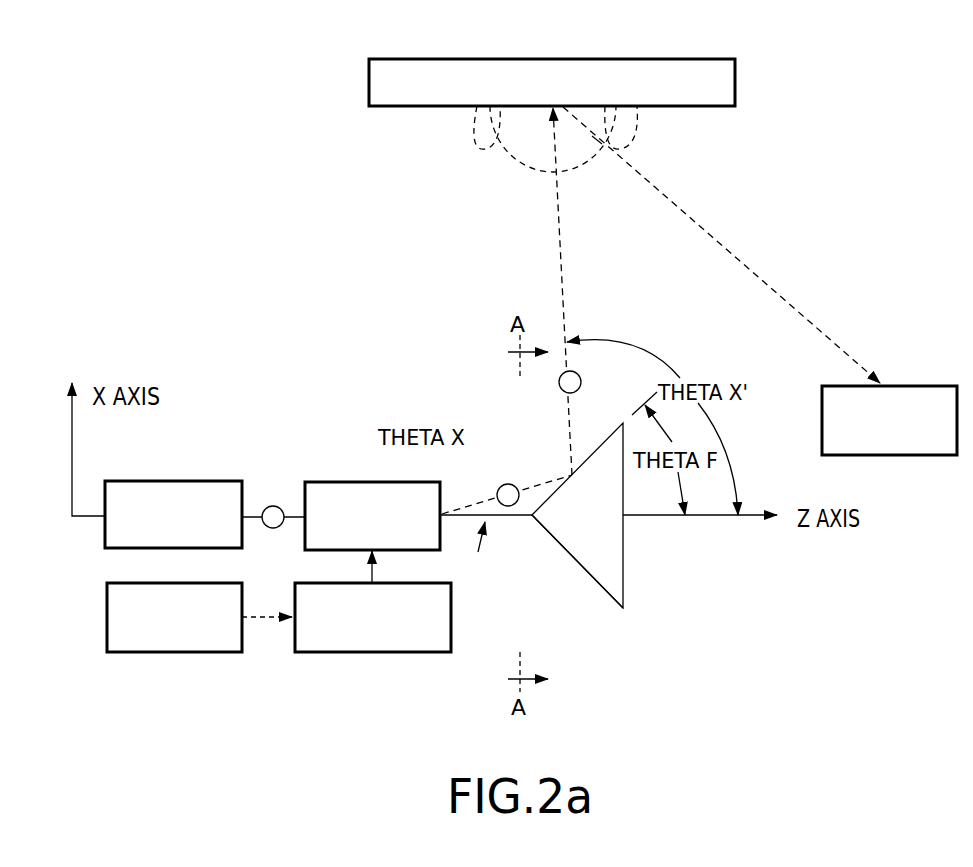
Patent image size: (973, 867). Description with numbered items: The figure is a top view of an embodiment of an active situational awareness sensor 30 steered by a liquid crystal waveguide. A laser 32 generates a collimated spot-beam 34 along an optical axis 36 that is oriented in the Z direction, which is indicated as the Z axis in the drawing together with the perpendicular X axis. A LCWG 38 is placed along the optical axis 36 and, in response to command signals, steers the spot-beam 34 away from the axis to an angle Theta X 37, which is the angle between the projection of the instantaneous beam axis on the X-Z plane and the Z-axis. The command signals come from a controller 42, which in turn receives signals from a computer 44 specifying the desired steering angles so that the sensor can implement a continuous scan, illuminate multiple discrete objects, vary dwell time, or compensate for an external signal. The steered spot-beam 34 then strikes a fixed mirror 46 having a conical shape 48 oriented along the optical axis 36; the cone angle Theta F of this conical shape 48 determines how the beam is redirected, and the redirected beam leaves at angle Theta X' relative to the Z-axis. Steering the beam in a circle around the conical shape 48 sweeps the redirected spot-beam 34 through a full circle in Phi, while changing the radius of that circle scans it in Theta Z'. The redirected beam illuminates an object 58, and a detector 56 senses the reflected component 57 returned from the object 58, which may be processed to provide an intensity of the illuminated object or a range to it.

The active situational awareness sensor 30 is at (248, 352).
The laser 32 is at (143, 481).
The collimated spot-beam 34 is at (273, 506).
The optical axis 36 is at (710, 517).
The Theta X 37 is at (482, 490).
The LCWG 38 is at (380, 482).
The controller 42 is at (415, 652).
The computer 44 is at (107, 620).
The fixed mirror 46 is at (633, 618).
The conical shape 48 is at (578, 562).
The detector 56 is at (905, 388).
The reflected component 57 is at (523, 158).
The object 58 is at (610, 59).